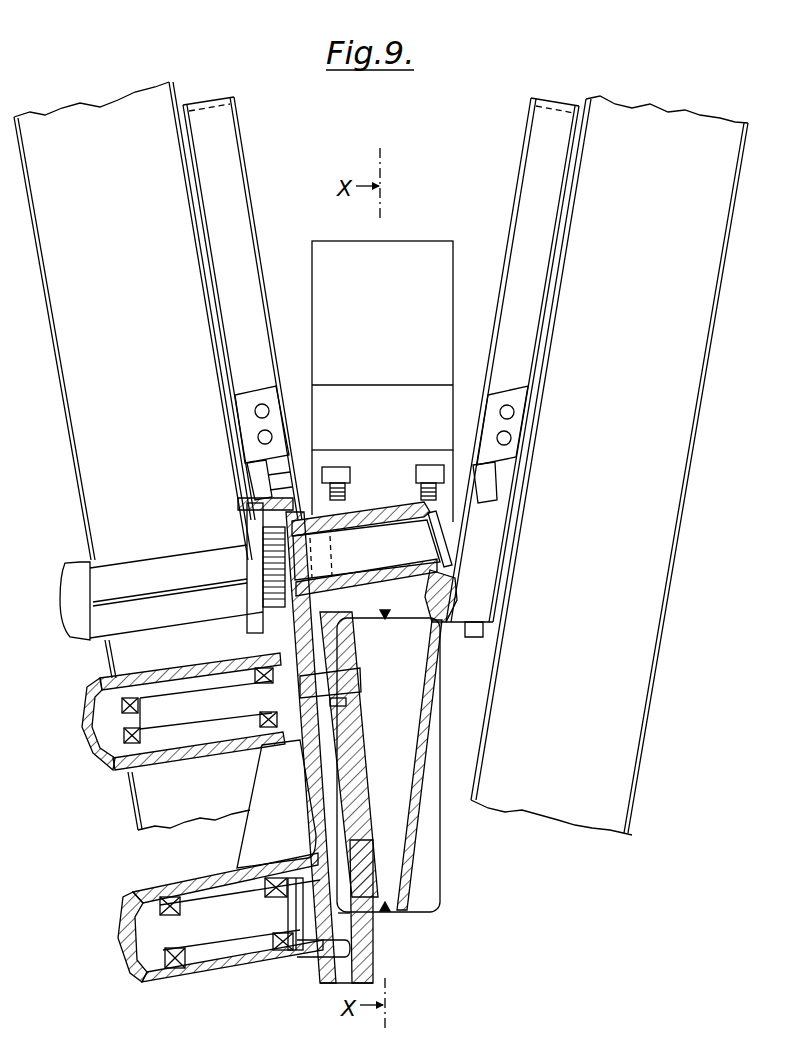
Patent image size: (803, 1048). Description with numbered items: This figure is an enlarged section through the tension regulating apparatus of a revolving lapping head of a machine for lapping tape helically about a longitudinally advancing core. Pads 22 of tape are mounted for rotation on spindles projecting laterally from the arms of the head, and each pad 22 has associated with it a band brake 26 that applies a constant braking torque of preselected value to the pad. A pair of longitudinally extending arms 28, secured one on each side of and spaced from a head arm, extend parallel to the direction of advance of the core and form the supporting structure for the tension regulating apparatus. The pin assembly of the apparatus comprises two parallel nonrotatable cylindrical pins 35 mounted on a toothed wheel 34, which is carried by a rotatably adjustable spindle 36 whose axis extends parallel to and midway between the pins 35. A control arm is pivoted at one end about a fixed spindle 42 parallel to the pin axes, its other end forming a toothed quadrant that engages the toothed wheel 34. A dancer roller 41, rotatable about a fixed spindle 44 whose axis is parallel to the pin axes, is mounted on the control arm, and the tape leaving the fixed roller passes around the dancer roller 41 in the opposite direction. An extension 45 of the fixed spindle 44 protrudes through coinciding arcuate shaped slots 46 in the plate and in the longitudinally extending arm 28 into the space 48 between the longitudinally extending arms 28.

The pad 22 is at (82, 113).
The band brake 26 is at (240, 182).
The arm 28 is at (345, 748).
The toothed wheel 34 is at (262, 552).
The cylindrical pin 35 is at (175, 600).
The spindle 36 is at (380, 512).
The dancer roller 41 is at (158, 747).
The fixed spindle 42 is at (222, 915).
The fixed spindle 44 is at (222, 706).
The extension 45 is at (358, 683).
The arcuate shaped slot 46 is at (342, 700).
The space 48 is at (388, 761).